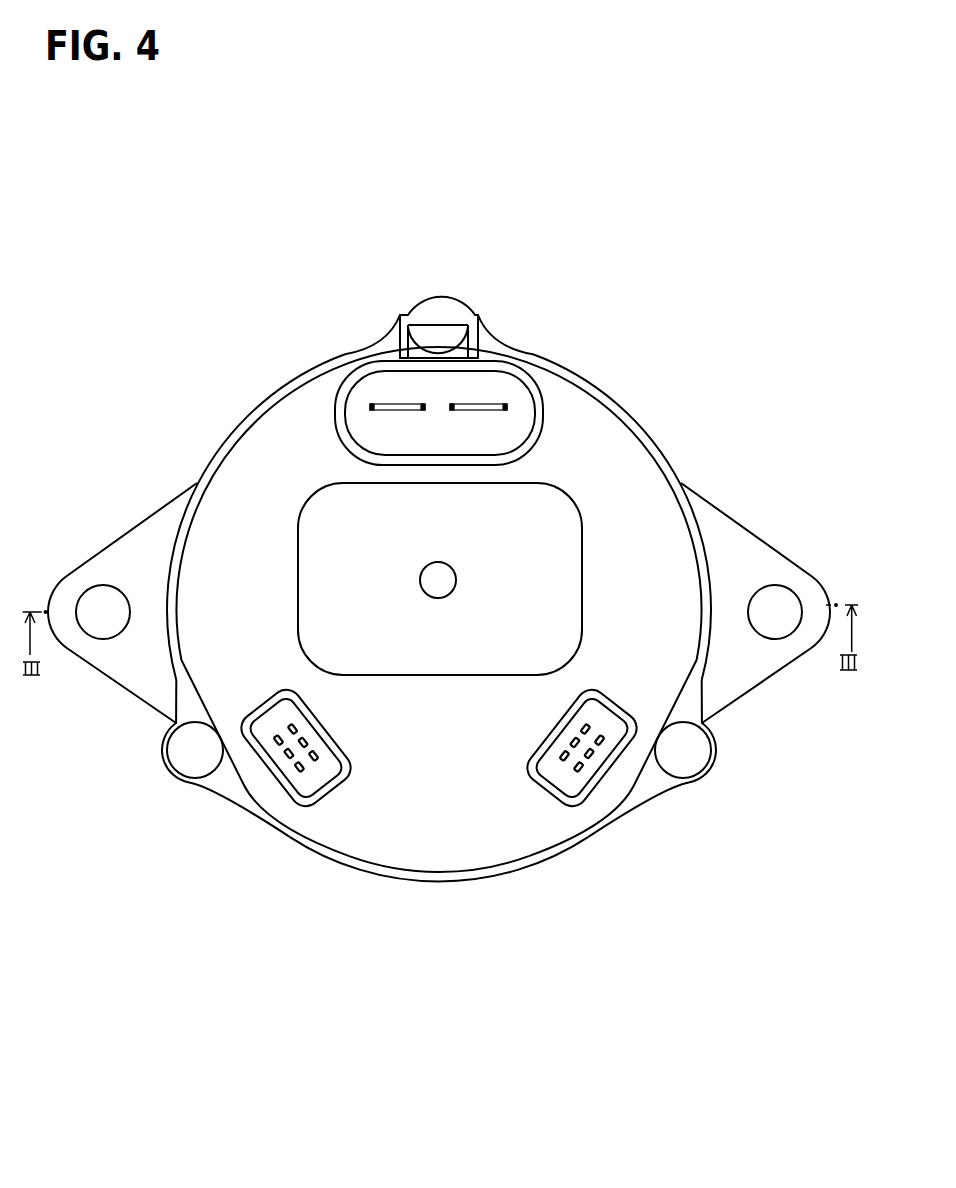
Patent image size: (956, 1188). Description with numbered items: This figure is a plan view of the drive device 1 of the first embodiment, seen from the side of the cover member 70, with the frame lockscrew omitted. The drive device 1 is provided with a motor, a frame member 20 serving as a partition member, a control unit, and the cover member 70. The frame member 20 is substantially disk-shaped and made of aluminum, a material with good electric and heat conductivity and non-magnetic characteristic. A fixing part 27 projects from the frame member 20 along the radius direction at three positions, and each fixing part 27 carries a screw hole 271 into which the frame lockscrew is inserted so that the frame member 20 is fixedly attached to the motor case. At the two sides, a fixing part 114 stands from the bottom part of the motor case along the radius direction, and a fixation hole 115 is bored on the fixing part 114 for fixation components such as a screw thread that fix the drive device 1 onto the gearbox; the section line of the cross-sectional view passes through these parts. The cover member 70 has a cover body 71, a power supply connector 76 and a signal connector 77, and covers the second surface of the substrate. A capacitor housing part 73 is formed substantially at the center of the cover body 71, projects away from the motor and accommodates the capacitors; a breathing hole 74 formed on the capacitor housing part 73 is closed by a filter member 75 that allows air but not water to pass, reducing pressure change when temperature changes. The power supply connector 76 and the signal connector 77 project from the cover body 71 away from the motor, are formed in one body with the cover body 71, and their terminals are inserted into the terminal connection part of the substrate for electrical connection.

The drive device 1 is at (278, 948).
The frame member 20 is at (630, 420).
The fixing part 27 is at (487, 347).
The screw hole 271 is at (455, 296).
The fixing part 114 is at (128, 555).
The fixation hole 115 is at (105, 625).
The cover member 70 is at (528, 862).
The cover body 71 is at (458, 838).
The capacitor housing part 73 is at (583, 550).
The breathing hole 74 is at (443, 572).
The filter member 75 is at (447, 585).
The power supply connector 76 is at (545, 387).
The signal connector 77 is at (330, 800).